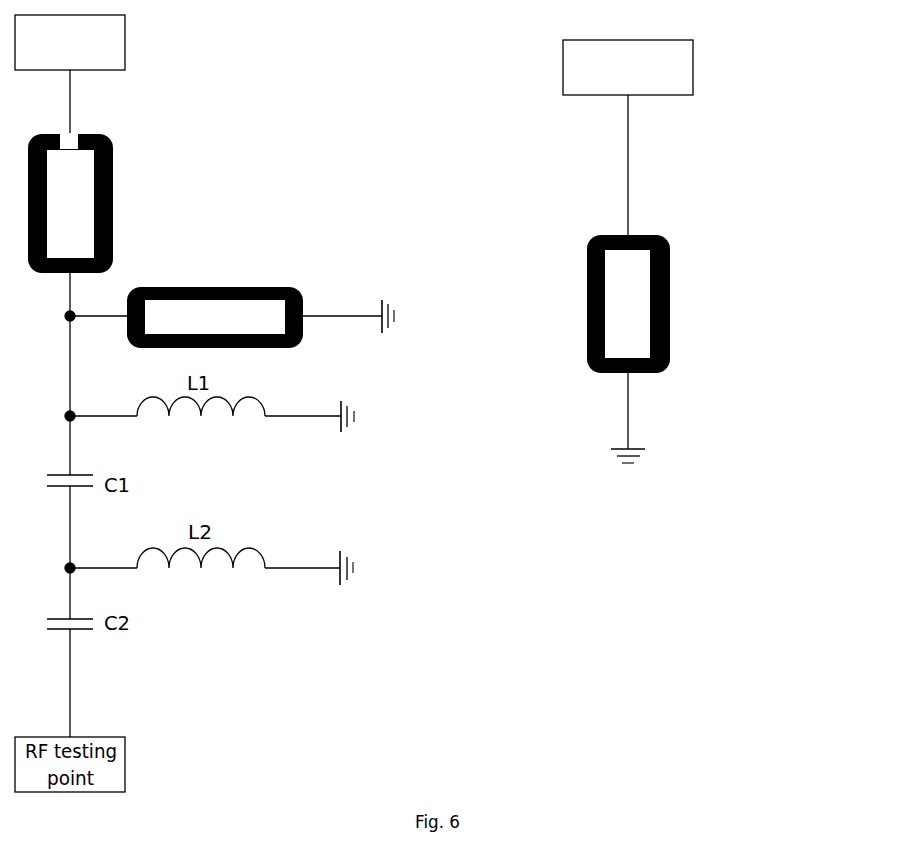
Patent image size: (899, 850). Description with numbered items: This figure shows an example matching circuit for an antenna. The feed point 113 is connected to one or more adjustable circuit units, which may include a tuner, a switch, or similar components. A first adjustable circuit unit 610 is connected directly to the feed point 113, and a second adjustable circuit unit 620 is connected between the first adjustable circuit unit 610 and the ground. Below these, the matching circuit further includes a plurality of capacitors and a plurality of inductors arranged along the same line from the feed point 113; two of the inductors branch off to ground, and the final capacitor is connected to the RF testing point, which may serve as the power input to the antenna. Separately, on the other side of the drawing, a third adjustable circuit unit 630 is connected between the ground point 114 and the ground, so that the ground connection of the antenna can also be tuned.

The feed point 113 is at (70, 42).
The ground point 114 is at (628, 137).
The first adjustable circuit unit 610 is at (143, 201).
The second adjustable circuit unit 620 is at (232, 289).
The third adjustable circuit unit 630 is at (707, 349).